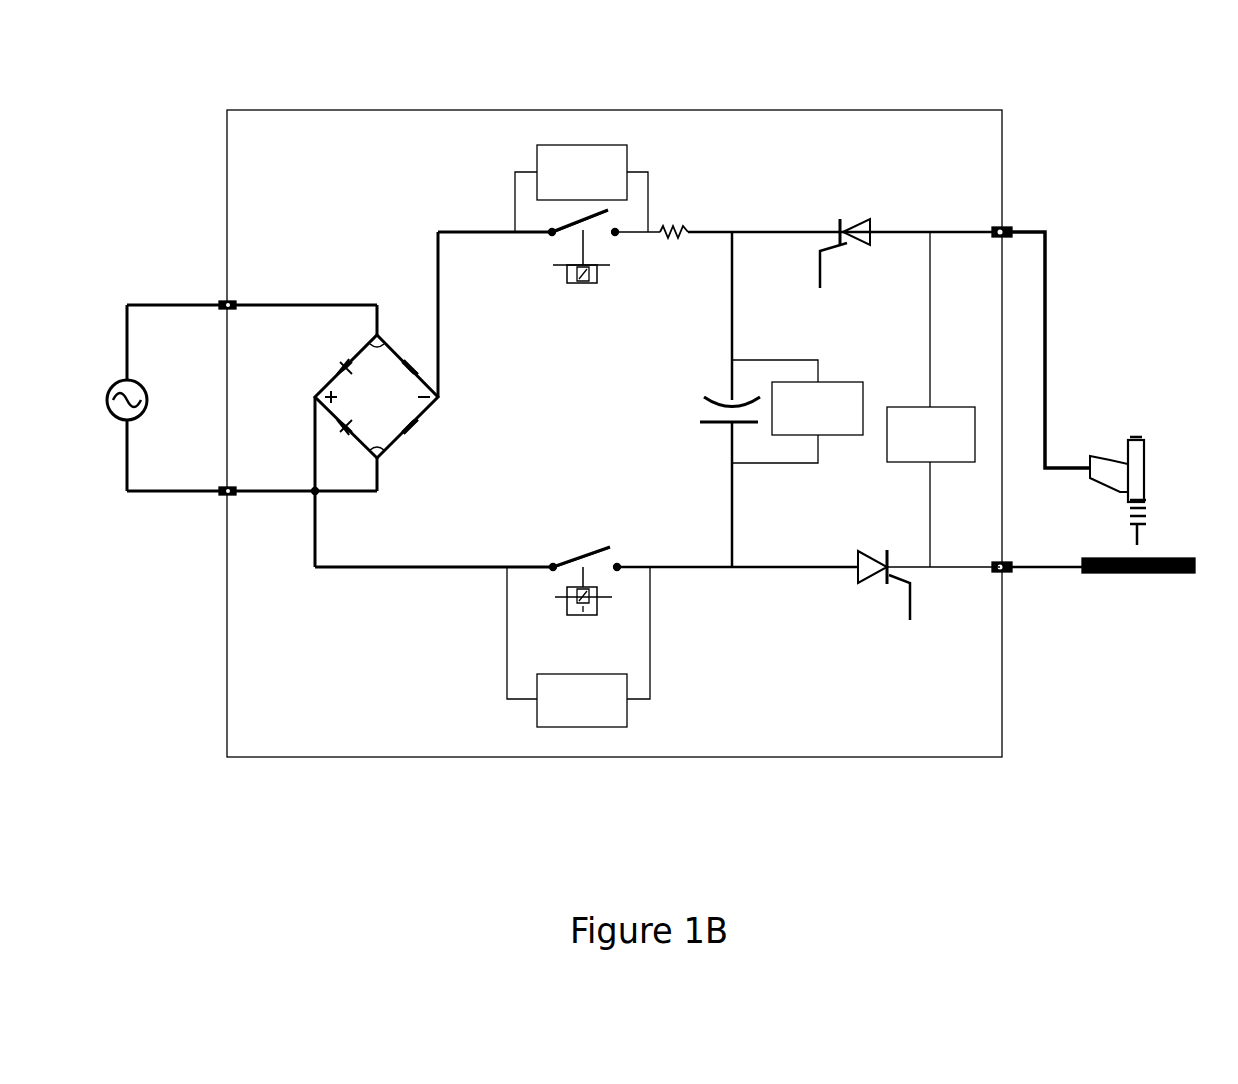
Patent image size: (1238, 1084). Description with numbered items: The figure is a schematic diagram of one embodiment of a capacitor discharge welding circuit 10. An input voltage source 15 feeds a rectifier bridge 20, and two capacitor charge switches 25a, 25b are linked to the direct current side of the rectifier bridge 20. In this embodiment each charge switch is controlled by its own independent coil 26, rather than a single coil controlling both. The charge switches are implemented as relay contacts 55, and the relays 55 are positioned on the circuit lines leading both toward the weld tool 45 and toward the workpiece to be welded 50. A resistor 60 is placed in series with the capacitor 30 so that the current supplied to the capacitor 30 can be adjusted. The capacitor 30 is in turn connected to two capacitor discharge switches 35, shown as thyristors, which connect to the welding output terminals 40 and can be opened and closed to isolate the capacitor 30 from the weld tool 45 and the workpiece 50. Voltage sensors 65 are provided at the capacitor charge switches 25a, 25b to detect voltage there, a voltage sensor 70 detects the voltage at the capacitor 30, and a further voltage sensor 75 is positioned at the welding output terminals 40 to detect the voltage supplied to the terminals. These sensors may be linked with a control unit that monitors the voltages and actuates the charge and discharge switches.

The capacitor discharge welding circuit 10 is at (626, 98).
The input voltage source 15 is at (106, 386).
The rectifier bridge 20 is at (385, 328).
The capacitor charge switch 25a is at (575, 232).
The capacitor charge switch 25b is at (565, 556).
The coil 26 is at (598, 283).
The capacitor 30 is at (705, 399).
The capacitor discharge switch 35 is at (860, 218).
The welding output terminal 40 is at (1018, 228).
The weld tool 45 is at (1148, 456).
The workpiece to be welded 50 is at (1155, 575).
The relay contacts 55 is at (572, 224).
The resistor 60 is at (668, 240).
The voltage sensor 65 is at (627, 150).
The voltage sensor 70 is at (850, 375).
The voltage sensor 75 is at (903, 465).